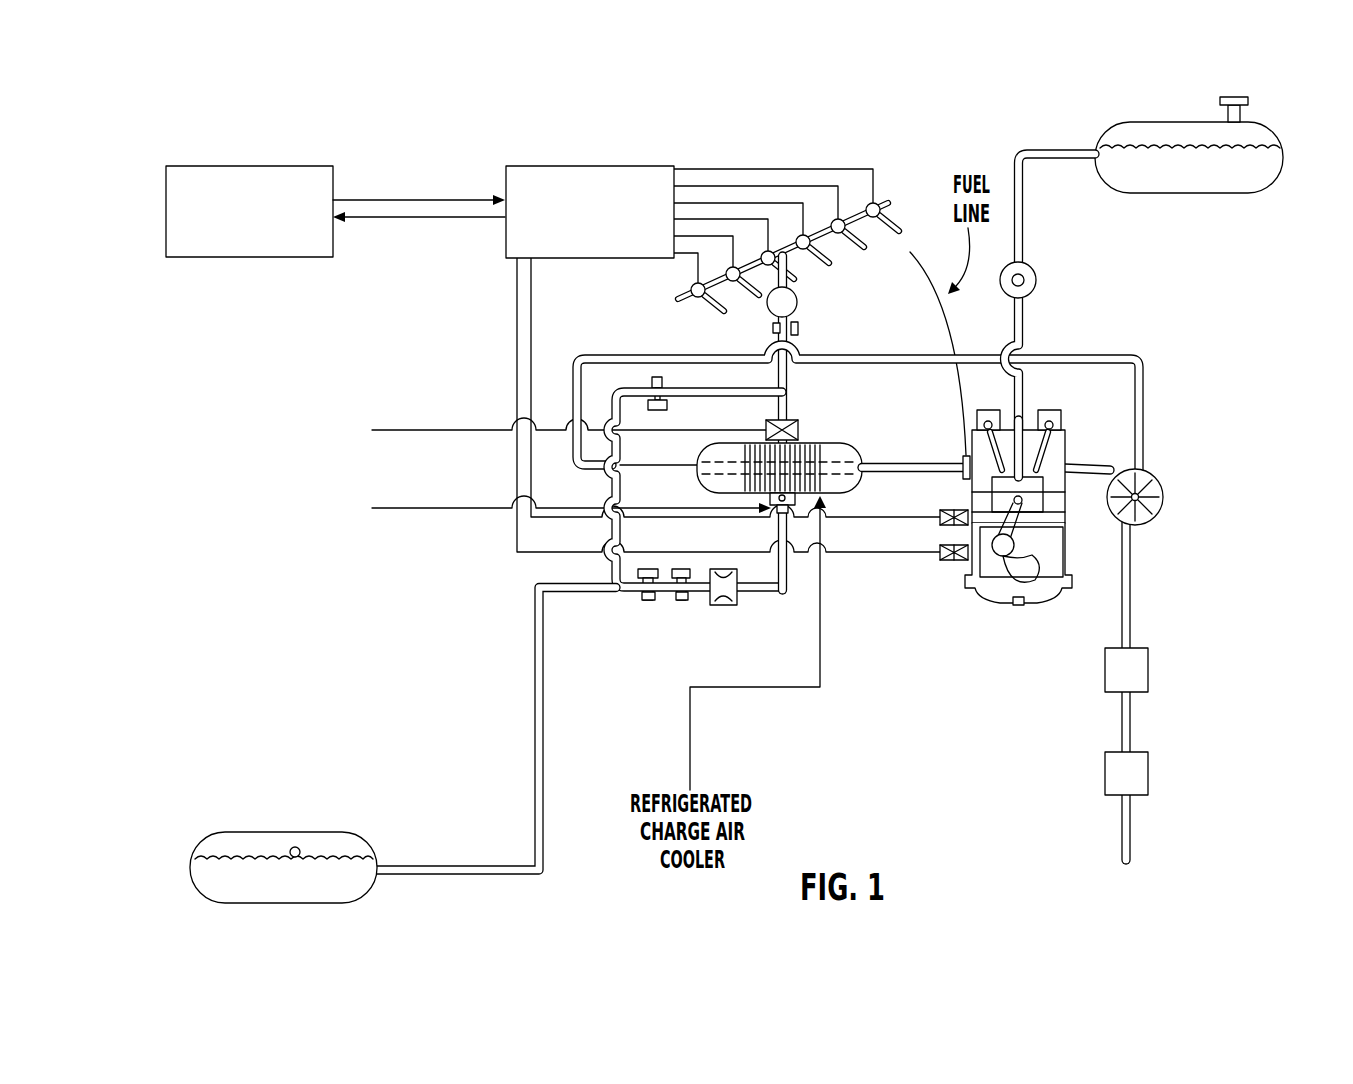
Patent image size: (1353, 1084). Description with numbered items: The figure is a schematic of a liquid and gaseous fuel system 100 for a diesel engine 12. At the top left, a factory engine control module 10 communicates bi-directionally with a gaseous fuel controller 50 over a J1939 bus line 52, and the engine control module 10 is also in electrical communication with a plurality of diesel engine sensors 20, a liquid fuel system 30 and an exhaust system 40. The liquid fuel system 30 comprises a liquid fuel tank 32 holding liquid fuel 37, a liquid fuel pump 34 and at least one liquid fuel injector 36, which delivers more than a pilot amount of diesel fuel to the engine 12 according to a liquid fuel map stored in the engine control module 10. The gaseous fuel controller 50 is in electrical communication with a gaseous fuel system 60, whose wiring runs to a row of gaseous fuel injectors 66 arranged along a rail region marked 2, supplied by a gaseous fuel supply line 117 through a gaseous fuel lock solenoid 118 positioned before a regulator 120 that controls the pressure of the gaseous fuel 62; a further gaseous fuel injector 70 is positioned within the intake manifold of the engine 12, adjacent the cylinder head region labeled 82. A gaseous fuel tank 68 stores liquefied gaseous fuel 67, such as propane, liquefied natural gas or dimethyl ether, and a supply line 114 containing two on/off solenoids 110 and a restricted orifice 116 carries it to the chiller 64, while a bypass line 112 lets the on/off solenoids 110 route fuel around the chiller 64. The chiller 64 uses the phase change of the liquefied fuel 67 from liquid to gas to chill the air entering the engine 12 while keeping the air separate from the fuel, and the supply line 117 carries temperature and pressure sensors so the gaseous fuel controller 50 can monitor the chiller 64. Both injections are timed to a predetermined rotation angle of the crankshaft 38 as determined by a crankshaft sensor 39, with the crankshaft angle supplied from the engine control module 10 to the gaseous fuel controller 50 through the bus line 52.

The engine control module 10 is at (270, 166).
The J1939 bus line 52 is at (437, 198).
The gaseous fuel controller 50 is at (568, 166).
The gaseous fuel system 60 is at (637, 162).
The liquid and gaseous fuel system 100 is at (680, 120).
The injector rail 2 is at (796, 266).
The gaseous fuel injector 66 is at (713, 310).
The regulator 120 is at (817, 350).
The gaseous fuel lock solenoid 118 is at (798, 330).
The gaseous fuel supply line 117 is at (808, 378).
The bypass line 112 is at (623, 393).
The on/off solenoids 110 is at (668, 406).
The gaseous fuel 62 is at (754, 455).
The chiller 64 is at (698, 480).
The gaseous fuel injector 70 is at (956, 453).
The liquid fuel injector 36 is at (1022, 438).
The cylinder head 82 is at (1052, 447).
The crankshaft 38 is at (1038, 562).
The diesel engine 12 is at (1018, 553).
The crankshaft sensor 39 is at (953, 565).
The diesel engine sensors 20 is at (929, 622).
The restricted orifice 116 is at (720, 607).
The supply line 114 is at (545, 732).
The gaseous fuel tank 68 is at (328, 843).
The liquefied gaseous fuel 67 is at (267, 854).
The liquid fuel system 30 is at (1146, 269).
The liquid fuel tank 32 is at (1147, 122).
The liquid fuel pump 34 is at (1030, 267).
The liquid fuel 37 is at (1255, 170).
The exhaust system 40 is at (1165, 735).